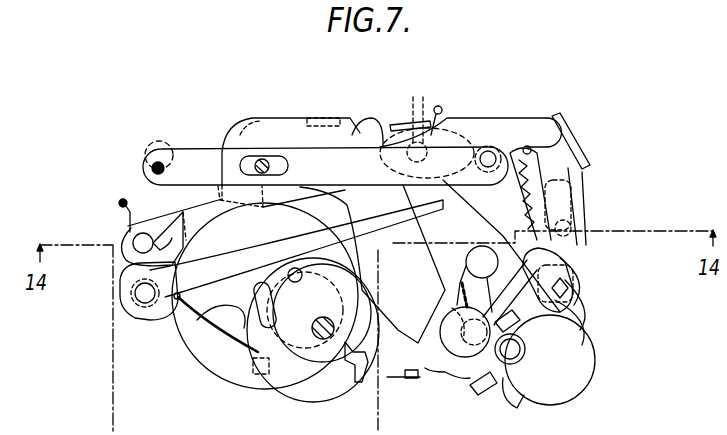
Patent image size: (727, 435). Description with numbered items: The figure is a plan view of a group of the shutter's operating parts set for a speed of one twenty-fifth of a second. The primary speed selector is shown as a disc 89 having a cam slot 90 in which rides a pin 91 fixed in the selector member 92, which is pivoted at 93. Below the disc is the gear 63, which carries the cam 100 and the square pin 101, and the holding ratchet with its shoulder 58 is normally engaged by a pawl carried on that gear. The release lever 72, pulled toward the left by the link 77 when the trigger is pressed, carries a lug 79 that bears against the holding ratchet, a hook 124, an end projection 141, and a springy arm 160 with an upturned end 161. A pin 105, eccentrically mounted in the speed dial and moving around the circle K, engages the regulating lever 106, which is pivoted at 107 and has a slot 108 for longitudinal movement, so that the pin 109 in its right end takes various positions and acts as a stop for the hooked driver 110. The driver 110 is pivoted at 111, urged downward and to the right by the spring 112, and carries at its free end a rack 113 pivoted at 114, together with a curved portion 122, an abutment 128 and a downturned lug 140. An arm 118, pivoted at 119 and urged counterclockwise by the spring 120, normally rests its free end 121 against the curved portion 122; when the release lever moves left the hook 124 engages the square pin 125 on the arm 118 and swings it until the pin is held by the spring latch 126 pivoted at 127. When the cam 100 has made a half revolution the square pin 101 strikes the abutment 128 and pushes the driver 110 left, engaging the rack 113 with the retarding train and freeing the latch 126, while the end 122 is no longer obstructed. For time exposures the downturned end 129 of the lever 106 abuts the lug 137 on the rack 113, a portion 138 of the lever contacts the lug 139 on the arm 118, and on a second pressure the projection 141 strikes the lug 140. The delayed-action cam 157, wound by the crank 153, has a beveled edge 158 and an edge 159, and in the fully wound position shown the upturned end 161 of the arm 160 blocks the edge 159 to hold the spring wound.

The circle K is at (150, 143).
The pin 105 is at (148, 170).
The lever 106 is at (185, 148).
The pivot 107 is at (265, 158).
The slot 108 is at (240, 145).
The pin 109 is at (497, 118).
The driver 110 is at (254, 122).
The pivot 111 is at (128, 258).
The spring 112 is at (122, 215).
The rack 113 is at (528, 148).
The pivot 114 is at (585, 230).
The arm 118 is at (501, 230).
The pivot 119 is at (420, 122).
The spring 120 is at (441, 106).
The free end 121 is at (572, 283).
The curved portion 122 is at (578, 262).
The hook 124 is at (580, 300).
The square pin 125 is at (582, 322).
The spring latch 126 is at (588, 338).
The pivot 127 is at (490, 314).
The abutment 128 is at (285, 203).
The downturned end 129 is at (560, 120).
The lug 137 is at (585, 140).
The portion 138 is at (372, 119).
The lug 139 is at (405, 125).
The downturned lug 140 is at (322, 118).
The end projection 141 is at (282, 157).
The crank 153 is at (458, 296).
The cam 157 is at (548, 383).
The radial edge 158 is at (550, 320).
The edge 159 is at (472, 392).
The arm 160 is at (465, 380).
The upturned end 161 is at (517, 408).
The shoulder 58 is at (177, 300).
The gear 63 is at (218, 385).
The release lever 72 is at (372, 283).
The link 77 is at (406, 385).
The lug 79 is at (466, 278).
The disc 89 is at (313, 402).
The cam slot 90 is at (250, 338).
The pin 91 is at (300, 298).
The selector member 92 is at (435, 210).
The pivot 93 is at (143, 304).
The cam 100 is at (210, 335).
The square pin 101 is at (258, 376).